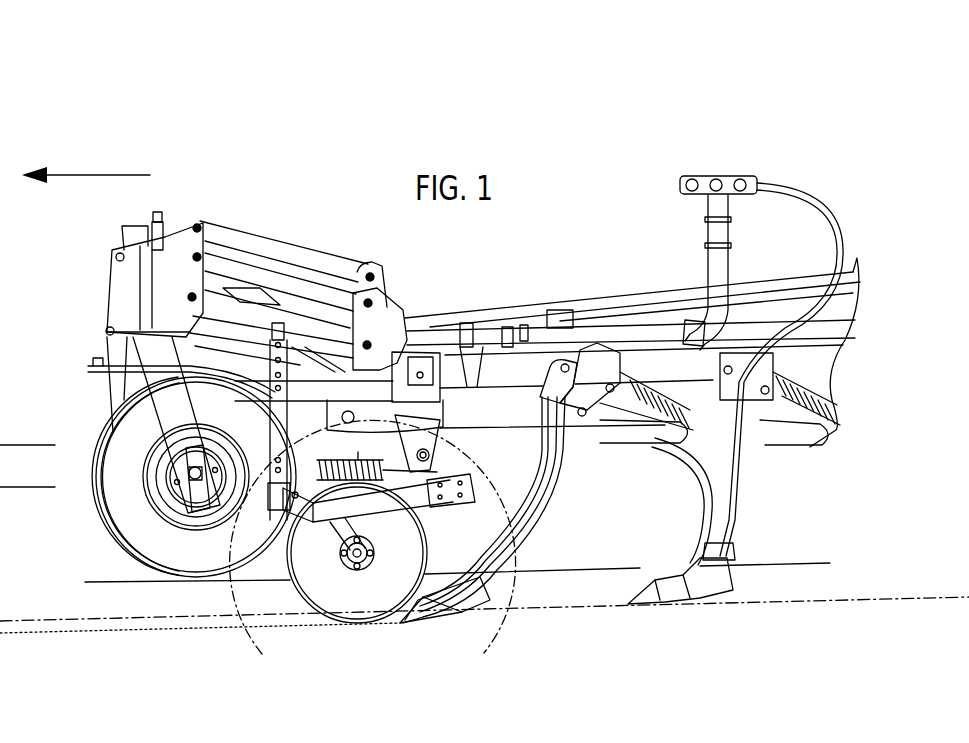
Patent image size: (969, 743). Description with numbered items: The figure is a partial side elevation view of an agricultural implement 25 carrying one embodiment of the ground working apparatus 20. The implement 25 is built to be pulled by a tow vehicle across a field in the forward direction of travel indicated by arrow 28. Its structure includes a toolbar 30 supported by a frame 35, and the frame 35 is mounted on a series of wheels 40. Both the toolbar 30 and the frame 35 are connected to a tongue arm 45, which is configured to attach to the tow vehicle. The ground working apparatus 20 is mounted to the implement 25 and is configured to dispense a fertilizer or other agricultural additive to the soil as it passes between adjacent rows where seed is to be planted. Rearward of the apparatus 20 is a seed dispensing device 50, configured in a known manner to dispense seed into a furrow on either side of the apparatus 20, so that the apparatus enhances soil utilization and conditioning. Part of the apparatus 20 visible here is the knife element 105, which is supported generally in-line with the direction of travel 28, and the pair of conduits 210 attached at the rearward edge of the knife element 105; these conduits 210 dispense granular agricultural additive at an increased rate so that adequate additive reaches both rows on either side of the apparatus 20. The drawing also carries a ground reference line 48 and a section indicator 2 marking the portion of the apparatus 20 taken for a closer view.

The agricultural implement 25 is at (228, 124).
The forward direction of travel 28 is at (82, 172).
The frame 35 is at (292, 220).
The toolbar 30 is at (452, 348).
The tongue arm 45 is at (13, 443).
The wheels 40 is at (90, 548).
The ground working apparatus 20 is at (409, 652).
The knife element 105 is at (478, 527).
The pair of conduits 210 is at (573, 486).
The seed dispensing device 50 is at (693, 614).
The ground surface 48 is at (585, 570).
The section line 2- 2 is at (373, 548).